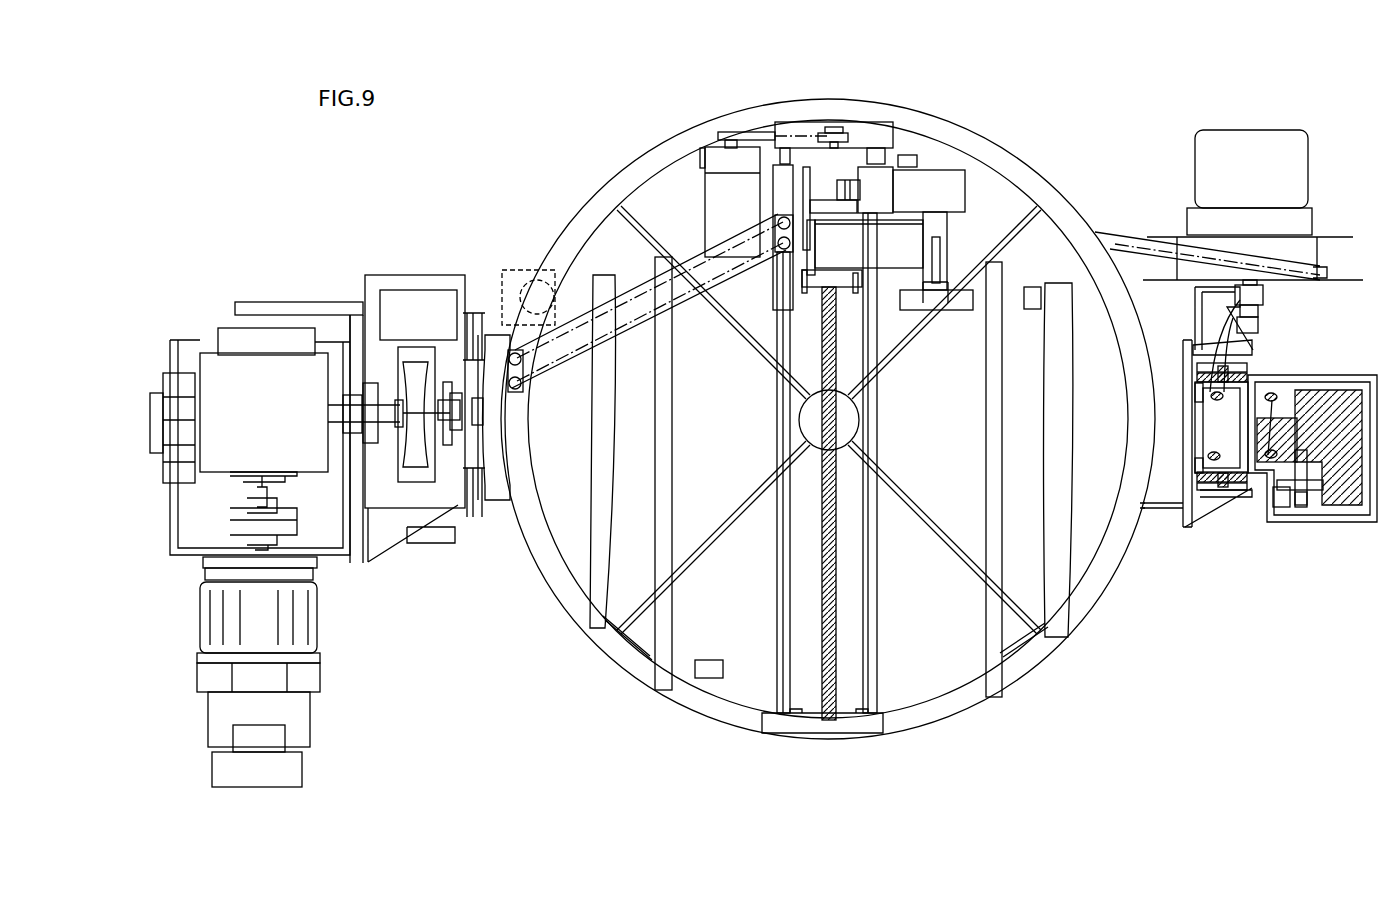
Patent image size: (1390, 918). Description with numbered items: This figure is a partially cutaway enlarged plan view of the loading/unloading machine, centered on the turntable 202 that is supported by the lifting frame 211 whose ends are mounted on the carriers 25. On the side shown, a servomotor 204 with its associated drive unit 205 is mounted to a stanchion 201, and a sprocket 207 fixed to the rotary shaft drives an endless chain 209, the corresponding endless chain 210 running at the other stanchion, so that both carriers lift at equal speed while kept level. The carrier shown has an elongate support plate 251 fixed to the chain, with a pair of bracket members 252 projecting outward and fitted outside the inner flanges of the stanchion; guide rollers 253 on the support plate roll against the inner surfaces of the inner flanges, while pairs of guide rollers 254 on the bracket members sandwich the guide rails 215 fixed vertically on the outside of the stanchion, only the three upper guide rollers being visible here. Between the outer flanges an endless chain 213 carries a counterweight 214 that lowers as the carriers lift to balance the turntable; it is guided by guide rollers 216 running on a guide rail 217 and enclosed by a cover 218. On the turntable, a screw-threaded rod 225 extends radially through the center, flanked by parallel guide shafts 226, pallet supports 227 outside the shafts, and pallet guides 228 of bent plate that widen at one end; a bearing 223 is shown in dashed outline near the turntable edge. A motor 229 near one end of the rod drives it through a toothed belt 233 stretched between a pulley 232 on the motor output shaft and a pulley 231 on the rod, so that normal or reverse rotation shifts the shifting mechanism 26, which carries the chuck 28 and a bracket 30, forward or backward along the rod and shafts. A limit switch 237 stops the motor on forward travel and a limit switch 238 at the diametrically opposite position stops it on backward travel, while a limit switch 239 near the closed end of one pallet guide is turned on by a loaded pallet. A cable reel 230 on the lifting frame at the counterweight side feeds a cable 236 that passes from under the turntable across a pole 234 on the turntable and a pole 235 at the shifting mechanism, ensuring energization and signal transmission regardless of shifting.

The turntable 202 is at (1055, 645).
The servomotor 204 is at (320, 648).
The drive unit 205 is at (218, 354).
The sprocket 207 is at (447, 446).
The endless chain 209 is at (410, 500).
The carrier 25 is at (482, 522).
The support plate 251 is at (500, 505).
The bearing 223 is at (520, 270).
The pole 234 is at (525, 388).
The pole 235 is at (778, 255).
The pulley 232 is at (718, 128).
The toothed belt 233 is at (775, 124).
The pulley 231 is at (850, 124).
The limit switch 238 is at (912, 149).
The shifting mechanism 26 is at (985, 184).
The motor 229 is at (712, 179).
The chuck 28 is at (812, 293).
The bracket 30 is at (950, 312).
The limit switch 239 is at (1030, 310).
The pallet support 227 is at (675, 402).
The pallet guide 228 is at (598, 486).
The screw-threaded rod 225 is at (826, 462).
The guide shaft 226 is at (795, 506).
The limit switch 237 is at (710, 660).
The cable reel 230 is at (1260, 144).
The cable 236 is at (1125, 246).
The bracket member 252 is at (1268, 364).
The guide roller 254 is at (1175, 354).
The guide roller 253 is at (1212, 454).
The endless chain 210 is at (1217, 402).
The stanchion 201 is at (1258, 499).
The counterweight 214 is at (1340, 399).
The guide rail 215 is at (1275, 412).
The endless chain 213 is at (1275, 393).
The guide roller 216 is at (1302, 450).
The guide rail 217 is at (1308, 492).
The cover 218 is at (1308, 500).
The lifting frame 211 is at (1160, 524).